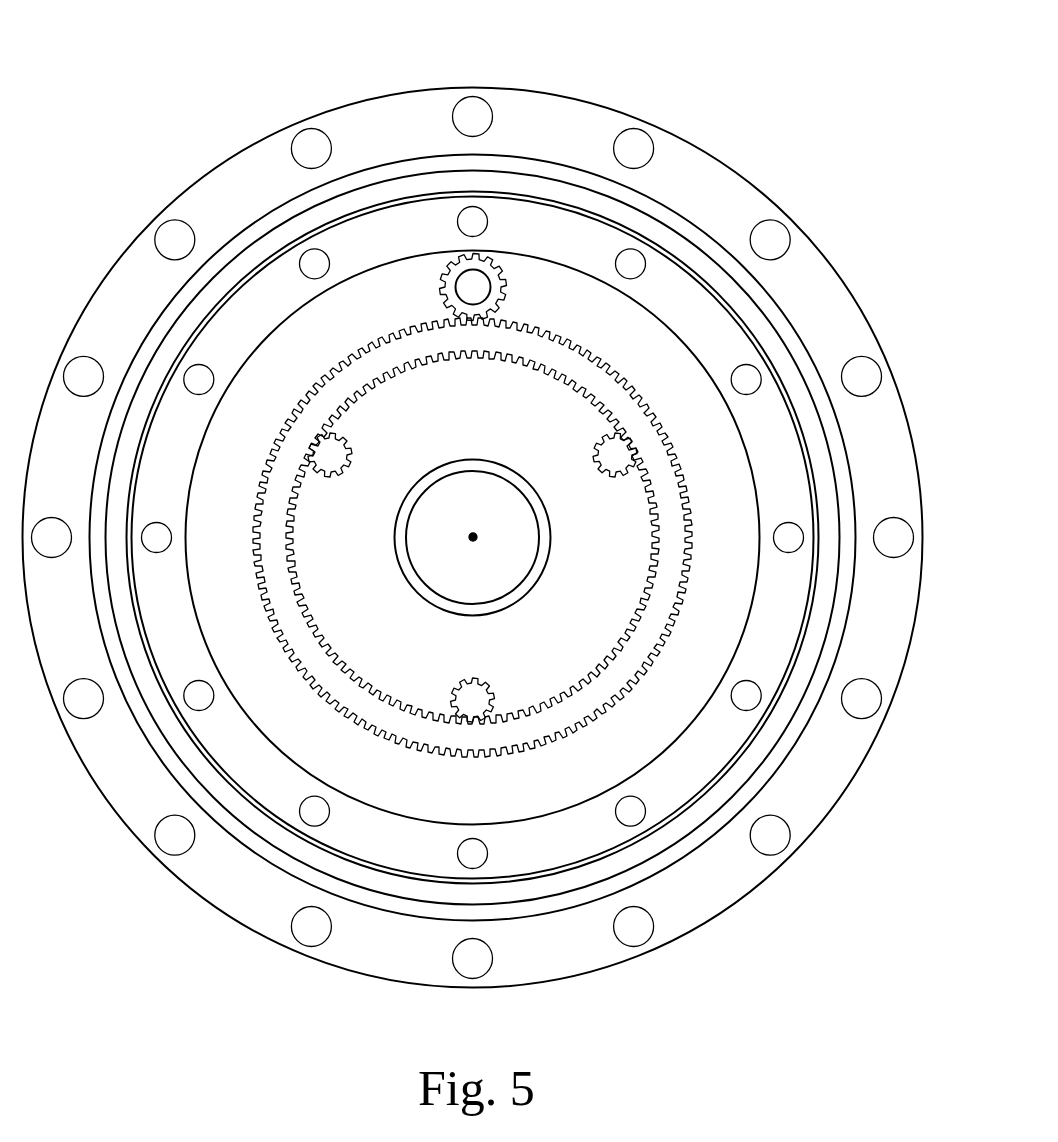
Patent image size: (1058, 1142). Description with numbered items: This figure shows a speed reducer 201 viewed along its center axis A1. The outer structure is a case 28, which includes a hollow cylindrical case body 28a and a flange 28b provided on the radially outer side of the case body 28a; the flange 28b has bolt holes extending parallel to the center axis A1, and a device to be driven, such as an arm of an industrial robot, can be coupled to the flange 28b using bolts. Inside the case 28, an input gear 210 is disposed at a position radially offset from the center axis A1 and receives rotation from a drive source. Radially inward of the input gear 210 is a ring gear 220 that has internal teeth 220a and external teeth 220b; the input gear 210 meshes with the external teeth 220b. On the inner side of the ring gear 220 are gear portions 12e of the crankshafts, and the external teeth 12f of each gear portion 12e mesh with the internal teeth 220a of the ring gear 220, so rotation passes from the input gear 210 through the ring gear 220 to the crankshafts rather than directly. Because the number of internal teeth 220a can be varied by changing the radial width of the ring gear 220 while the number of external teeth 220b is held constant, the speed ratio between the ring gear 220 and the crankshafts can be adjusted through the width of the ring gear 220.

The speed reducer 201 is at (706, 76).
The case 28 is at (767, 187).
The case body 28a is at (667, 217).
The flange 28b is at (820, 285).
The input gear 210 is at (498, 283).
The ring gear 220 is at (472, 568).
The internal teeth 220a is at (368, 688).
The external teeth 220b is at (437, 755).
The gear portion 12e is at (472, 569).
The external teeth 12f is at (494, 700).
The center axis A1 is at (473, 533).